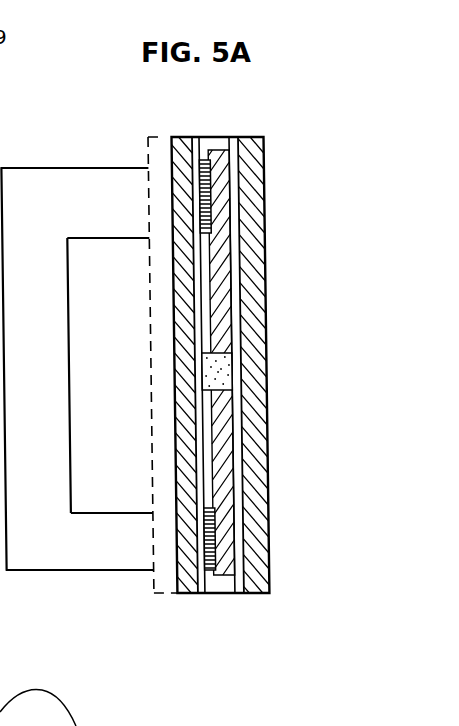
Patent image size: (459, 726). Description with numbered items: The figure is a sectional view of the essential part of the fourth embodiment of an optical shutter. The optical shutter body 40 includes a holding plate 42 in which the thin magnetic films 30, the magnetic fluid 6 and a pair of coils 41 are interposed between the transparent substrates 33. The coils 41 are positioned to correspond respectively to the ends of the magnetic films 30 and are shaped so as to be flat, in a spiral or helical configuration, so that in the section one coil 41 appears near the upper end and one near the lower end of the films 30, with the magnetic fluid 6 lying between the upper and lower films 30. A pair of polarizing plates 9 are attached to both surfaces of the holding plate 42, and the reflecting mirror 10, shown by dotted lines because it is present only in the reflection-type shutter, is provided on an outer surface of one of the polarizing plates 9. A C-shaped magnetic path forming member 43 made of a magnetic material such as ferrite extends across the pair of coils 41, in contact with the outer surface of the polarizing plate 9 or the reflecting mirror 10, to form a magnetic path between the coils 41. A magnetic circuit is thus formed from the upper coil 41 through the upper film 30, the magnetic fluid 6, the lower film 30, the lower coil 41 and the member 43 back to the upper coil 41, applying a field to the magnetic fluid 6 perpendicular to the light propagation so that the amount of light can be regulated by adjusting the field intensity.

The magnetic fluid 6 is at (226, 371).
The polarizing plate 9 is at (179, 595).
The reflecting mirror 10 is at (151, 590).
The thin magnetic film 30 is at (221, 285).
The transparent substrate 33 is at (192, 595).
The optical shutter body 40 is at (244, 386).
The coil 41 is at (208, 205).
The holding plate 42 is at (238, 126).
The magnetic path forming member 43 is at (46, 168).